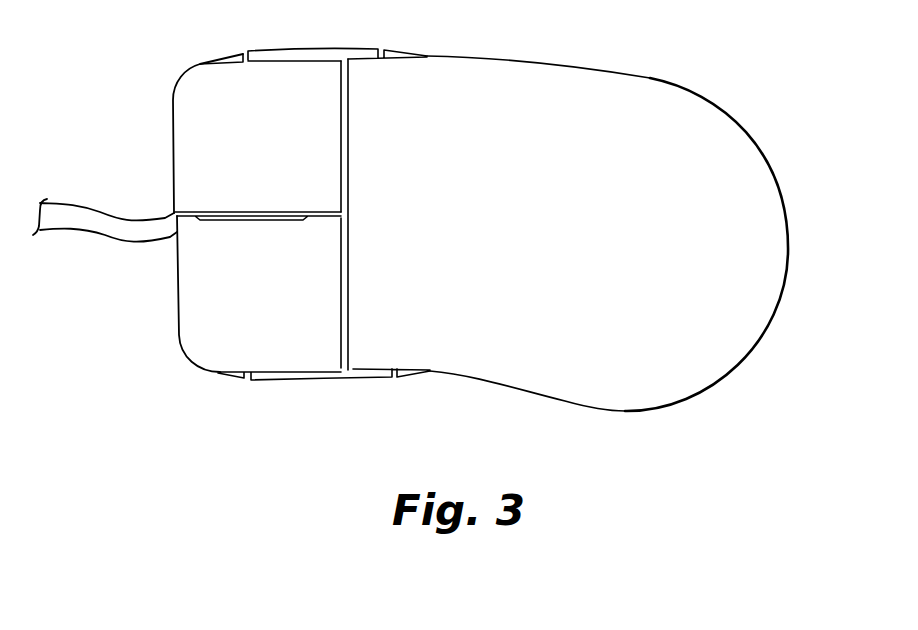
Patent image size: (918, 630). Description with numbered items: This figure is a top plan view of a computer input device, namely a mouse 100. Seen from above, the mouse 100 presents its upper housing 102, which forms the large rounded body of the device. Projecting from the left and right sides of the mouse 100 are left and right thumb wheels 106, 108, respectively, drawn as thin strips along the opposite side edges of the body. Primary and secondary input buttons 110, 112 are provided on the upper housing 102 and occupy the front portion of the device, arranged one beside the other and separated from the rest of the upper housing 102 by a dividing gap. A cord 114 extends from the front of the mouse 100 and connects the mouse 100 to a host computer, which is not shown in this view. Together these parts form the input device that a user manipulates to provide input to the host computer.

The mouse 100 is at (463, 211).
The upper housing 102 is at (712, 133).
The left thumb wheel 106 is at (358, 377).
The right thumb wheel 108 is at (310, 50).
The primary input button 110 is at (197, 297).
The secondary input button 112 is at (207, 138).
The cord 114 is at (73, 211).